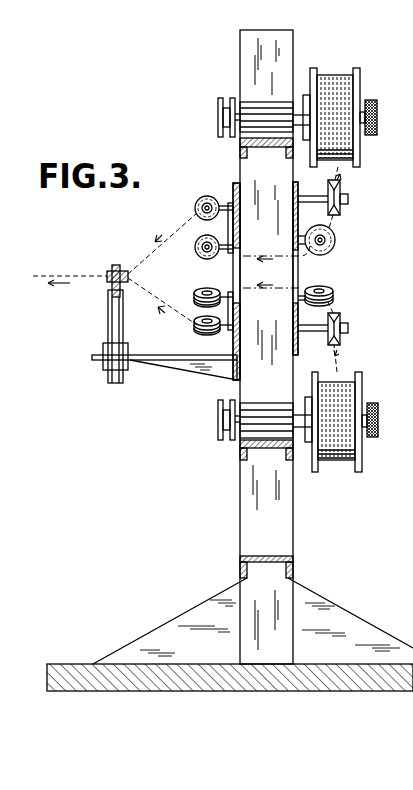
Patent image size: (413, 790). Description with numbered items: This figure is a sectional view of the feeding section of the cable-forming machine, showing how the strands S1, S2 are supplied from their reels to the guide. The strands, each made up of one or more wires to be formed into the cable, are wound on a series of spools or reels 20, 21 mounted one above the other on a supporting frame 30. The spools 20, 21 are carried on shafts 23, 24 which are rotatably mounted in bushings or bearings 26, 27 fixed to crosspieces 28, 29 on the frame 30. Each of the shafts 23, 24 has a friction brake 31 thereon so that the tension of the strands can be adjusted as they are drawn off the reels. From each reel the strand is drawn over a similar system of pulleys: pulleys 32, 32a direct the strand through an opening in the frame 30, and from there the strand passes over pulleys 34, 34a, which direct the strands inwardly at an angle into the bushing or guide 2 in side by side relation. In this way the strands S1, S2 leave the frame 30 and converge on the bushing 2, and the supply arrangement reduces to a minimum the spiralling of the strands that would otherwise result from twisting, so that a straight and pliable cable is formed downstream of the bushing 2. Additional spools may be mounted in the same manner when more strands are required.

The bushing or guide 2 is at (115, 267).
The spool or reel 20 is at (357, 84).
The spool or reel 21 is at (359, 390).
The shaft 23 is at (298, 118).
The shaft 24 is at (300, 420).
The bushing or bearing 26 is at (257, 106).
The bushing or bearing 27 is at (254, 423).
The crosspiece 28 is at (240, 147).
The crosspiece 29 is at (243, 458).
The supporting frame 30 is at (243, 45).
The friction brake 31 is at (218, 114).
The pulley 32 is at (341, 189).
The pulley 32a is at (331, 241).
The pulley 34 is at (196, 250).
The pulley 34a is at (209, 197).
The strand S1 is at (180, 225).
The strand S2 is at (168, 302).